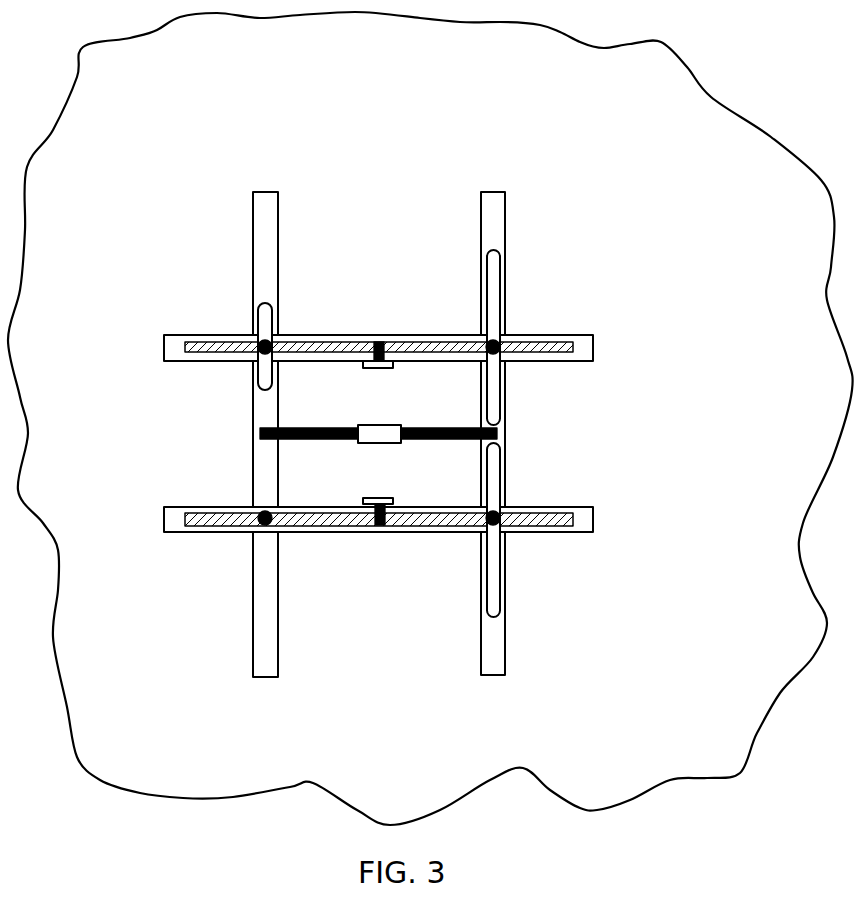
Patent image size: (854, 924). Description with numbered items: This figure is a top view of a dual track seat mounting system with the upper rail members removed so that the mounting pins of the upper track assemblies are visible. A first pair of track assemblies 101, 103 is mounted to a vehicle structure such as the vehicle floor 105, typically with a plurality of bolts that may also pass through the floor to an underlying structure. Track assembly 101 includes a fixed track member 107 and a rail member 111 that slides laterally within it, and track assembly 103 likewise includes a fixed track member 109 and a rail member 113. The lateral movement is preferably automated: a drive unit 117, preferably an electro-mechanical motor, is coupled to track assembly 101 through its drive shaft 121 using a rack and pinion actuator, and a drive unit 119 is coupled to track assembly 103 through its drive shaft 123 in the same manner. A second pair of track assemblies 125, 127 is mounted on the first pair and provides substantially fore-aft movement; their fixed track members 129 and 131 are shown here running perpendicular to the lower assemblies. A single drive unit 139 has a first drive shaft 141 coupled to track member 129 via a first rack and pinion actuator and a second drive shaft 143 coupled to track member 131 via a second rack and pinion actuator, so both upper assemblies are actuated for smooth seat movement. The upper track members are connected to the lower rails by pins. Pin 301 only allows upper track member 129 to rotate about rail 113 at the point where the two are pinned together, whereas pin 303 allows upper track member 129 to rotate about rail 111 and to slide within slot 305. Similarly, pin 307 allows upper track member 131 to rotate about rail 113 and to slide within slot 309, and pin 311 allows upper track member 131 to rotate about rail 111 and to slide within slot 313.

The track assembly 101 is at (598, 318).
The track assembly 103 is at (582, 484).
The vehicle floor 105 is at (407, 76).
The fixed track member 107 is at (584, 362).
The fixed track member 109 is at (584, 534).
The rail member 111 is at (535, 354).
The rail member 113 is at (535, 528).
The drive unit 117 is at (379, 370).
The drive unit 119 is at (383, 497).
The drive shaft 121 is at (383, 346).
The drive shaft 123 is at (366, 510).
The track assembly 125 is at (297, 240).
The track assembly 127 is at (460, 230).
The fixed track member 129 is at (264, 203).
The fixed track member 131 is at (493, 202).
The drive unit 139 is at (385, 425).
The first drive shaft 141 is at (336, 428).
The second drive shaft 143 is at (416, 428).
The pin 301 is at (263, 512).
The pin 303 is at (259, 338).
The slot 305 is at (265, 312).
The pin 307 is at (491, 536).
The slot 309 is at (496, 612).
The pin 311 is at (493, 340).
The slot 313 is at (494, 274).